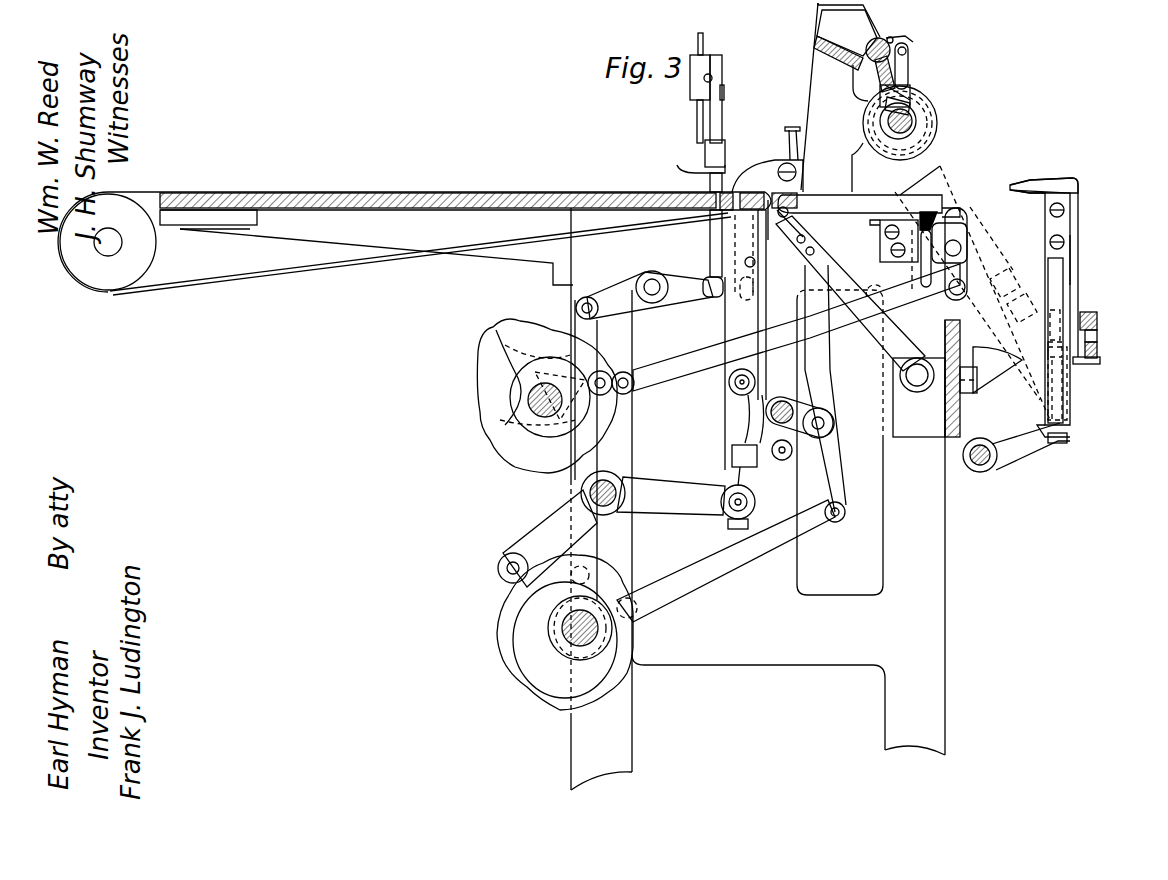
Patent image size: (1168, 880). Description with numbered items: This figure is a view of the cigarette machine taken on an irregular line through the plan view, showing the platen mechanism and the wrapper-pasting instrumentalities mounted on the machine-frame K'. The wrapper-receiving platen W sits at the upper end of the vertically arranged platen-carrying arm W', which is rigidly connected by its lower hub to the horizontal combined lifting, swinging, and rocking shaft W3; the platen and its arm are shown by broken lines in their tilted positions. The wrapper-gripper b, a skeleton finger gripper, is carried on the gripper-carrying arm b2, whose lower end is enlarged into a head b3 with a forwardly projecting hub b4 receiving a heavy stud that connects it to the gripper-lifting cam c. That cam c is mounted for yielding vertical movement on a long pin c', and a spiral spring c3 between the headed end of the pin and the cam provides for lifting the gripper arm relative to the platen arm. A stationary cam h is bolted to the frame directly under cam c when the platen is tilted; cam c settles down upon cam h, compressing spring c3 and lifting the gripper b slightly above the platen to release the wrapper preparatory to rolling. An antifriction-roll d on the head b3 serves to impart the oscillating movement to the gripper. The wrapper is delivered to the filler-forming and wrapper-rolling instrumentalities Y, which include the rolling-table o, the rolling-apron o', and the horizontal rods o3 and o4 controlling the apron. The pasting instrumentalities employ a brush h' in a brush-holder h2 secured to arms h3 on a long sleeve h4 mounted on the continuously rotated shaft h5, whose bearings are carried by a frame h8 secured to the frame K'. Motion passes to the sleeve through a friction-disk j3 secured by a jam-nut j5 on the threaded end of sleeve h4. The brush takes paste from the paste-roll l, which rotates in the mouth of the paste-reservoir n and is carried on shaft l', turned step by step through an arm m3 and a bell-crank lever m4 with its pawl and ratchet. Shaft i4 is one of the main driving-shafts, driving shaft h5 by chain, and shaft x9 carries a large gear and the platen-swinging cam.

The paste-reservoir n is at (847, 33).
The paste-roll l is at (870, 44).
The bell-crank lever m4 is at (892, 40).
The shaft l' is at (918, 34).
The arm m3 is at (909, 66).
The brush h' is at (876, 74).
The brush-holder h2 is at (910, 87).
The arms h3 is at (914, 101).
The sleeve h4 is at (898, 135).
The shaft h5 is at (911, 114).
The frame h8 is at (840, 97).
The friction-disk j3 is at (937, 123).
The jam-nut j5 is at (933, 137).
The filler-forming and wrapper-rolling instrumentalities Y is at (762, 161).
The horizontally-arranged rod o4 is at (800, 194).
The rolling-apron o' is at (869, 206).
The horizontally-arranged rod o3 is at (806, 226).
The rolling-table o is at (916, 250).
The machine-frame K' is at (765, 499).
The shaft i4 is at (540, 420).
The shaft x9 is at (565, 637).
The wrapper-receiving platen W is at (1058, 310).
The wrapper-gripper b is at (1053, 182).
The gripper-carrying arm b2 is at (1080, 258).
The platen-carrying arm W' is at (1079, 340).
The antifriction-roll d is at (1097, 318).
The head b3 is at (1097, 335).
The hub b4 is at (1097, 349).
The pin c' is at (1042, 326).
The spiral spring c3 is at (1050, 353).
The gripper-lifting cam c is at (1069, 383).
The stationary cam h is at (991, 358).
The shaft W3 is at (985, 471).